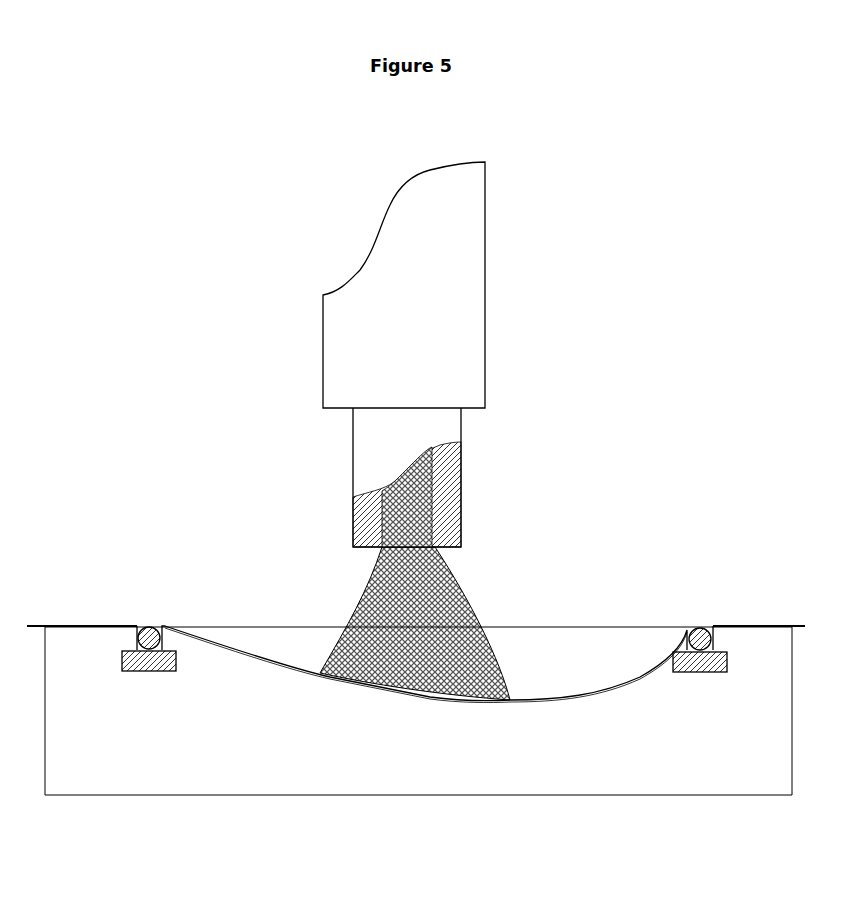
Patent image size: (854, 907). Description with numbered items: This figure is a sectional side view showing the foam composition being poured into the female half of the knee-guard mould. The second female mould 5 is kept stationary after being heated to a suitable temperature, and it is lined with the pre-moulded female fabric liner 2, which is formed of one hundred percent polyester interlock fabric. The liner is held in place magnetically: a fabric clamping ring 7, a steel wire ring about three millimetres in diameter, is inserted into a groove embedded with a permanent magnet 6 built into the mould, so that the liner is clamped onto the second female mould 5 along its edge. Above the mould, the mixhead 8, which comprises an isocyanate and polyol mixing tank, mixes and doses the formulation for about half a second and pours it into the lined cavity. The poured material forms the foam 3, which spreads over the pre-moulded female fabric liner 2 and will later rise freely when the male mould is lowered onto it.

The pre-moulded female fabric liner 2 is at (33, 627).
The foam 3 is at (423, 598).
The second female mould 5 is at (345, 762).
The permanent magnet 6 is at (698, 662).
The fabric clamping ring 7 is at (143, 627).
The mixhead 8 is at (455, 190).